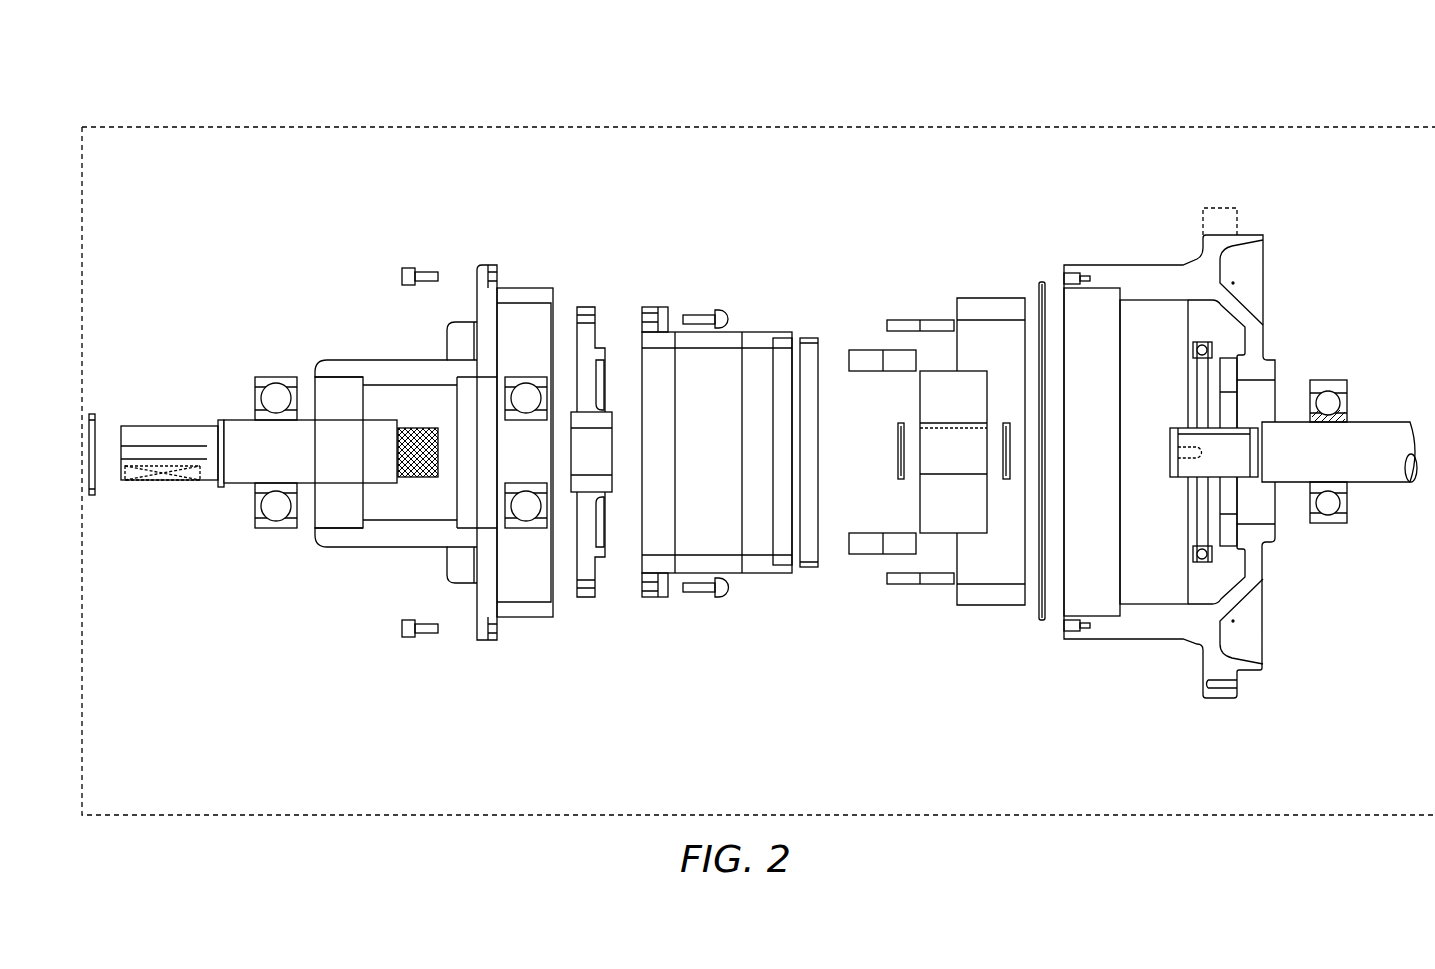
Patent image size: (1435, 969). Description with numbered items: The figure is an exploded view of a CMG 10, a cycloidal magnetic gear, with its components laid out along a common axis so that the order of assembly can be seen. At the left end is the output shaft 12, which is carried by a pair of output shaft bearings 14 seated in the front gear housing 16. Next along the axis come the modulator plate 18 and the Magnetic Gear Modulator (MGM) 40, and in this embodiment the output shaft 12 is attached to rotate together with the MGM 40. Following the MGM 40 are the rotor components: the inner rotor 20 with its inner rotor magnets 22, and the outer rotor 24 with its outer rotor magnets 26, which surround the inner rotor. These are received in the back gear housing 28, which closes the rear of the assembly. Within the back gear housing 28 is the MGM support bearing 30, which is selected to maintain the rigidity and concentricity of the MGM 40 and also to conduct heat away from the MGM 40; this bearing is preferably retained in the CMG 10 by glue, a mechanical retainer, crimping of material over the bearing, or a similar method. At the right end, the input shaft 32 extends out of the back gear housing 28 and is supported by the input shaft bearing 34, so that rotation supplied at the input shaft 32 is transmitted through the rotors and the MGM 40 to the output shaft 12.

The CMG 10 is at (332, 98).
The output shaft 12 is at (300, 461).
The output shaft bearings 14 is at (274, 396).
The front gear housing 16 is at (423, 371).
The modulator plate 18 is at (582, 347).
The Magnetic Gear Modulator (MGM) 40 is at (765, 342).
The inner rotor magnets 22 is at (863, 361).
The outer rotor magnets 26 is at (915, 323).
The outer rotor 24 is at (983, 308).
The inner rotor 20 is at (966, 406).
The back gear housing 28 is at (1168, 291).
The MGM support bearing 30 is at (1212, 340).
The input shaft 32 is at (1350, 460).
The input shaft bearing 34 is at (1327, 402).